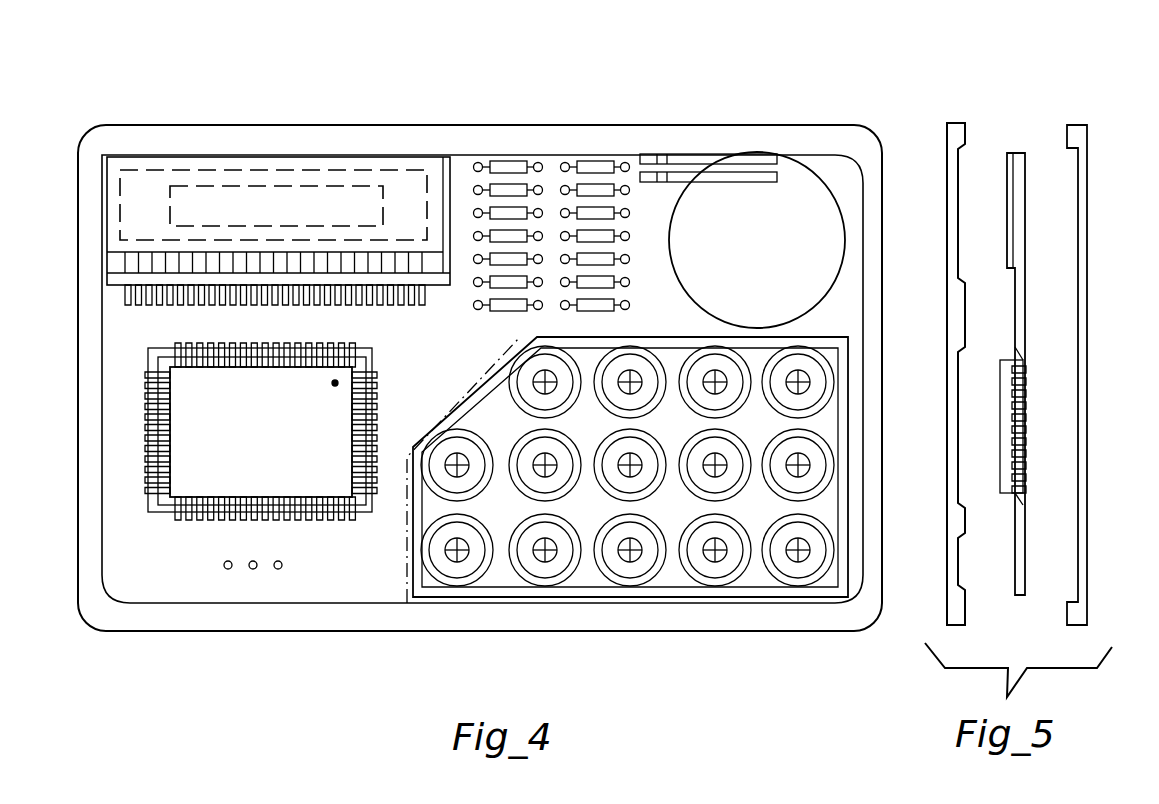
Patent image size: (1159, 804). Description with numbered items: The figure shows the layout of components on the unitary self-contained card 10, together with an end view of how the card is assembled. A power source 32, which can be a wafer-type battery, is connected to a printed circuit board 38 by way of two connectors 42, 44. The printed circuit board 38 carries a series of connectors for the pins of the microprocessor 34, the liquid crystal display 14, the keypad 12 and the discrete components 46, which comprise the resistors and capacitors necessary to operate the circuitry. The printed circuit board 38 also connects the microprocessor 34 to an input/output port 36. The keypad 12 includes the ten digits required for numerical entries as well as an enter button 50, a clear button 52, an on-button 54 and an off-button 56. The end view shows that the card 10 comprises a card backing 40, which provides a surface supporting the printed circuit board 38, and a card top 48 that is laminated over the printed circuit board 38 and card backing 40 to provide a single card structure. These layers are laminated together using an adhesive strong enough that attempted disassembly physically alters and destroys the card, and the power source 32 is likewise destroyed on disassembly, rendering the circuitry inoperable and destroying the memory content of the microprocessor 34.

In FIG. 4, the unitary self-contained card 10 is at (457, 432).
In FIG. 4, the keypad 12 is at (655, 458).
In FIG. 4, the liquid crystal display 14 is at (193, 198).
In FIG. 4, the power source 32 is at (770, 306).
In FIG. 4, the microprocessor 34 is at (262, 447).
In FIG. 4, the input/output port 36 is at (224, 561).
In FIG. 4, the printed circuit board 38 is at (372, 563).
In FIG. 5, the printed circuit board 38 is at (1012, 152).
In FIG. 4, the card backing 40 is at (85, 615).
In FIG. 5, the card backing 40 is at (1077, 127).
In FIG. 4, the connector 42 is at (862, 70).
In FIG. 4, the connector 44 is at (780, 158).
In FIG. 4, the discrete components 46 is at (504, 156).
In FIG. 5, the card top 48 is at (948, 200).
In FIG. 4, the enter button 50 is at (562, 433).
In FIG. 4, the clear button 52 is at (570, 352).
In FIG. 4, the on-button 54 is at (485, 443).
In FIG. 4, the off-button 56 is at (483, 502).